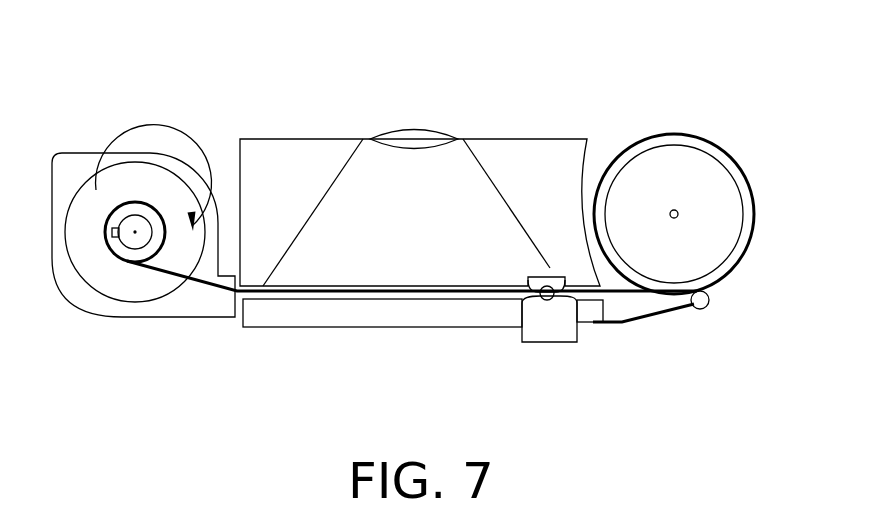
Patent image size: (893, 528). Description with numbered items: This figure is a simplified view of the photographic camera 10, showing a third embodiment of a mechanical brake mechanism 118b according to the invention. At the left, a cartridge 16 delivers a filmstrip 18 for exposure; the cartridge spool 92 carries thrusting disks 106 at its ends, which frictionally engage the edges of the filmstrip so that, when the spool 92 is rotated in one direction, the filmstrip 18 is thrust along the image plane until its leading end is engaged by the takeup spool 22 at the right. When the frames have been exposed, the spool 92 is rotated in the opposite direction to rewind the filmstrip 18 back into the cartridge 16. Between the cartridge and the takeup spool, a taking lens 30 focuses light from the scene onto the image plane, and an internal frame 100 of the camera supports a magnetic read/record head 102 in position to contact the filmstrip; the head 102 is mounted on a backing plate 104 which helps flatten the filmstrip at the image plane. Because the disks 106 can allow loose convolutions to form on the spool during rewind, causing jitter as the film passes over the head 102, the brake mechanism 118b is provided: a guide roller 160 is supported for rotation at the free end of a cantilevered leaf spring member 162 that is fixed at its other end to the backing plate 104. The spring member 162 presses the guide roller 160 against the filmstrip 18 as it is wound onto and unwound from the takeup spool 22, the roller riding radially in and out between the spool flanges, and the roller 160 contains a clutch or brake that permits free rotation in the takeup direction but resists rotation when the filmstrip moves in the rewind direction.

The photographic camera 10 is at (177, 58).
The cartridge 16 is at (135, 153).
The spool 92 is at (123, 240).
The thrusting disks 106 is at (120, 290).
The filmstrip 18 is at (221, 295).
The taking lens 30 is at (413, 133).
The internal frame 100 is at (572, 142).
The takeup spool 22 is at (723, 247).
The backing plate 104 is at (333, 322).
The magnetic read/record head 102 is at (550, 338).
The cantilevered leaf spring member 162 is at (655, 317).
The guide roller 160 is at (707, 308).
The third embodiment of mechanical brake mechanism 118b is at (735, 306).